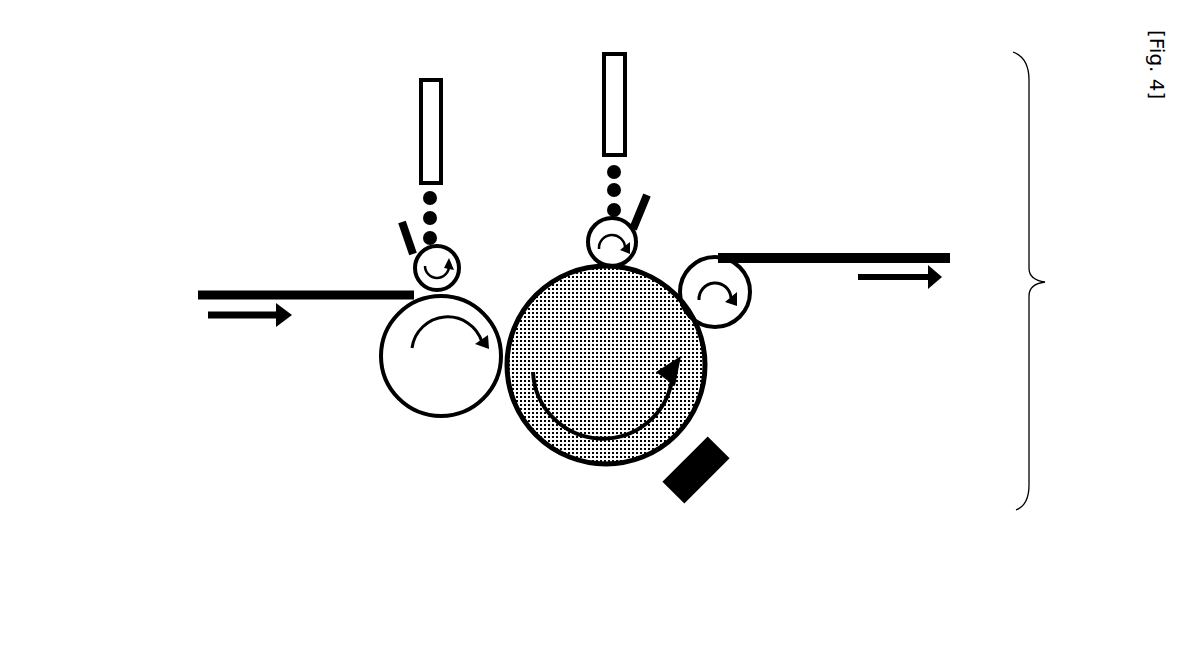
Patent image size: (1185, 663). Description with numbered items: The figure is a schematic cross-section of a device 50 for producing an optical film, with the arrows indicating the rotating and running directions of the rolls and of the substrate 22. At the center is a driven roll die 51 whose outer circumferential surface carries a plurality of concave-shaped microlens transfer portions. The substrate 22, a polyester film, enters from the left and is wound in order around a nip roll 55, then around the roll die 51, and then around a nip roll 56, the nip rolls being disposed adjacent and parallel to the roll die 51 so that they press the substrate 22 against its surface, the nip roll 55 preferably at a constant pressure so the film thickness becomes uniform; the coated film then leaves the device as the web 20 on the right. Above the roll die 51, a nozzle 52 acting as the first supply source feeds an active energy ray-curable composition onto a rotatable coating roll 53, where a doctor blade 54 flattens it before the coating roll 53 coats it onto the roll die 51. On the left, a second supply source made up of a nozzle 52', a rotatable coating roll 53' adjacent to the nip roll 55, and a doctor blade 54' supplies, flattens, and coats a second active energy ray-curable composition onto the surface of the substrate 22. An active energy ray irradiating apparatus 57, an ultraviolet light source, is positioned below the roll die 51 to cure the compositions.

The recording medium after fixing 20 is at (882, 250).
The substrate 22 is at (255, 290).
The device for producing an optical film 50 is at (1054, 281).
The roll die 51 is at (675, 343).
The nozzle 52 is at (696, 135).
The nozzle 52' is at (354, 162).
The coating roll 53 is at (688, 239).
The coating roll 53' is at (363, 261).
The doctor blade 54 is at (711, 197).
The doctor blade 54' is at (340, 218).
The nip roll 55 is at (412, 370).
The nip roll 56 is at (708, 295).
The active energy ray irradiating apparatus 57 is at (728, 463).